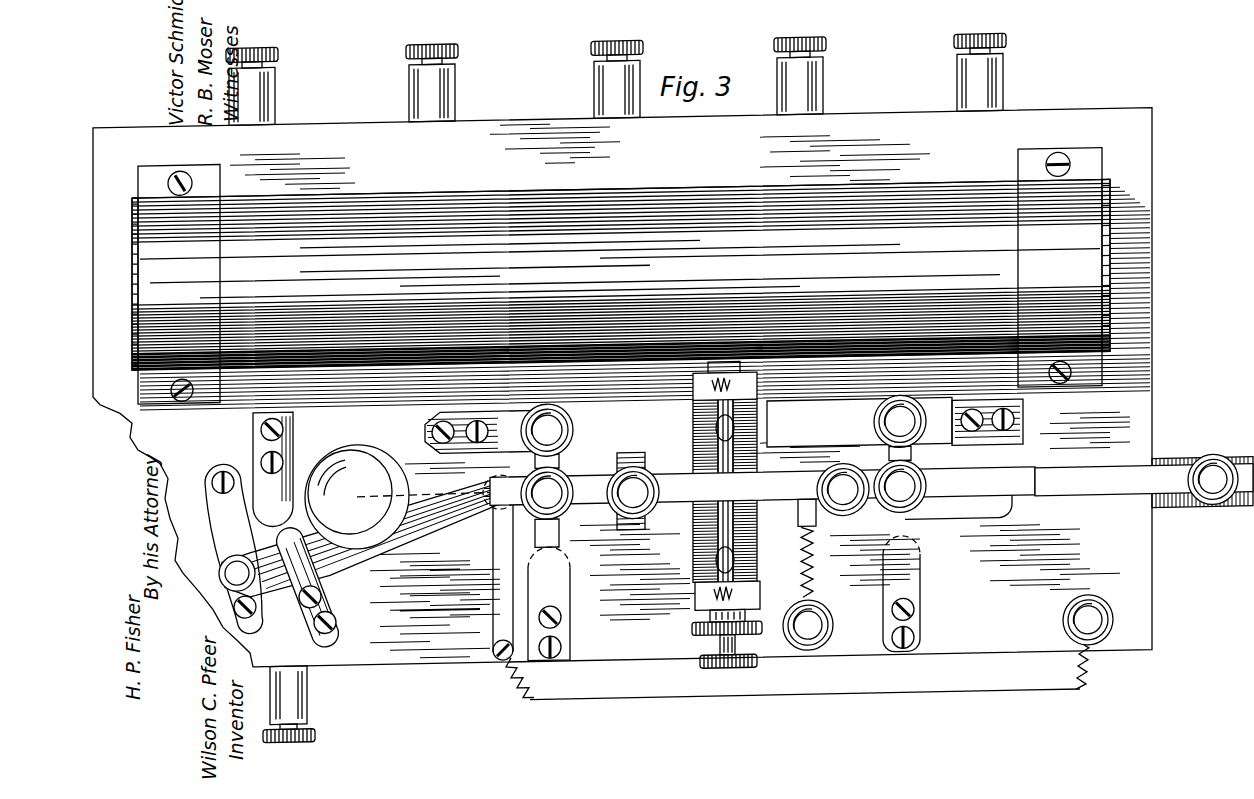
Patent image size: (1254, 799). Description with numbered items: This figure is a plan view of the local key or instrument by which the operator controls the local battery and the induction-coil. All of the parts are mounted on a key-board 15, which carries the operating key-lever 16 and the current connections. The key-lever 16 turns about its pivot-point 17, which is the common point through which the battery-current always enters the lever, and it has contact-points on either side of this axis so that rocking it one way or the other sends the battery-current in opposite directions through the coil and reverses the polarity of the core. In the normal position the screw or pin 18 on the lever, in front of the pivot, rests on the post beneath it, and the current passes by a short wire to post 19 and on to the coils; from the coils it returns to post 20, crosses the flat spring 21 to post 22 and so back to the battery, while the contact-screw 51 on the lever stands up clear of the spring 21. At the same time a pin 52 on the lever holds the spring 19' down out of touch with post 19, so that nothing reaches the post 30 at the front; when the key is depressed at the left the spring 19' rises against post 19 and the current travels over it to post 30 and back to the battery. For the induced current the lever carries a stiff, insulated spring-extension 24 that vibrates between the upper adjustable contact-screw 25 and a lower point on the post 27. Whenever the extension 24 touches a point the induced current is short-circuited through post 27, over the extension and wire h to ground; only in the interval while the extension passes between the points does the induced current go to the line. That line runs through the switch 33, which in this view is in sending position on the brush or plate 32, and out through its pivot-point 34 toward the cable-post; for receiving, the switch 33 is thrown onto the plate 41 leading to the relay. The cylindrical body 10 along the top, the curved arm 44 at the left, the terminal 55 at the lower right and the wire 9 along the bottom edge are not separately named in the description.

The wire 9 is at (922, 708).
The drum 10 is at (672, 208).
The key-board 15 is at (1150, 290).
The key-lever 16 is at (684, 515).
The pivot-point 17 is at (758, 475).
The screw or pin 18 is at (836, 489).
The post 19 is at (895, 422).
The spring 19' is at (920, 456).
The post 20 is at (572, 451).
The flat spring 21 is at (556, 539).
The post 22 is at (571, 609).
The spring-extension 24 is at (1112, 514).
The contact-point 25 is at (1222, 486).
The post 27 is at (1250, 530).
The post 30 is at (922, 598).
The brush or plate 32 is at (320, 592).
The switch 33 is at (420, 538).
The pivot-point 34 is at (494, 518).
The brush or plate 41 is at (265, 500).
The arm 44 is at (208, 537).
The contact-screw 51 is at (560, 492).
The pin 52 is at (930, 503).
The binding ring 55 is at (1105, 634).
The wire h is at (814, 566).